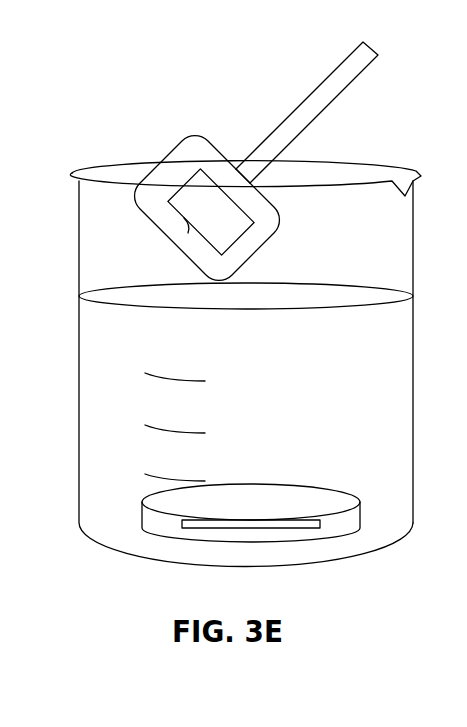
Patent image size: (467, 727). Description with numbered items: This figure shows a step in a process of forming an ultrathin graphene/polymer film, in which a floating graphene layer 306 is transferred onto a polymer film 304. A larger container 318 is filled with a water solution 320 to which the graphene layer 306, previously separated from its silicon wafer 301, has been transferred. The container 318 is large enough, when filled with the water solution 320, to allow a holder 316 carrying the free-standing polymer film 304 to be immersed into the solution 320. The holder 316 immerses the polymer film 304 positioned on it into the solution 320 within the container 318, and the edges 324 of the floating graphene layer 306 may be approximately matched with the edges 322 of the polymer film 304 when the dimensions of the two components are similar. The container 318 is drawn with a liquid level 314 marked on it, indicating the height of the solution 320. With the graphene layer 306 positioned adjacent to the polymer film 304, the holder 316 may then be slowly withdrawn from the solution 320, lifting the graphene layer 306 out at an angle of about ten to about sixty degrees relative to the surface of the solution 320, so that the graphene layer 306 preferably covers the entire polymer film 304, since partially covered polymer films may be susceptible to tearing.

The silicon wafer 301 is at (320, 528).
The polymer film 304 is at (250, 186).
The graphene film 306 is at (230, 225).
The liquid level 314 is at (142, 529).
The holder 316 is at (327, 108).
The container 318 is at (79, 218).
The water solution 320 is at (379, 410).
The edges of the polymer film 322 is at (183, 227).
The edges of the graphene layer 324 is at (192, 173).